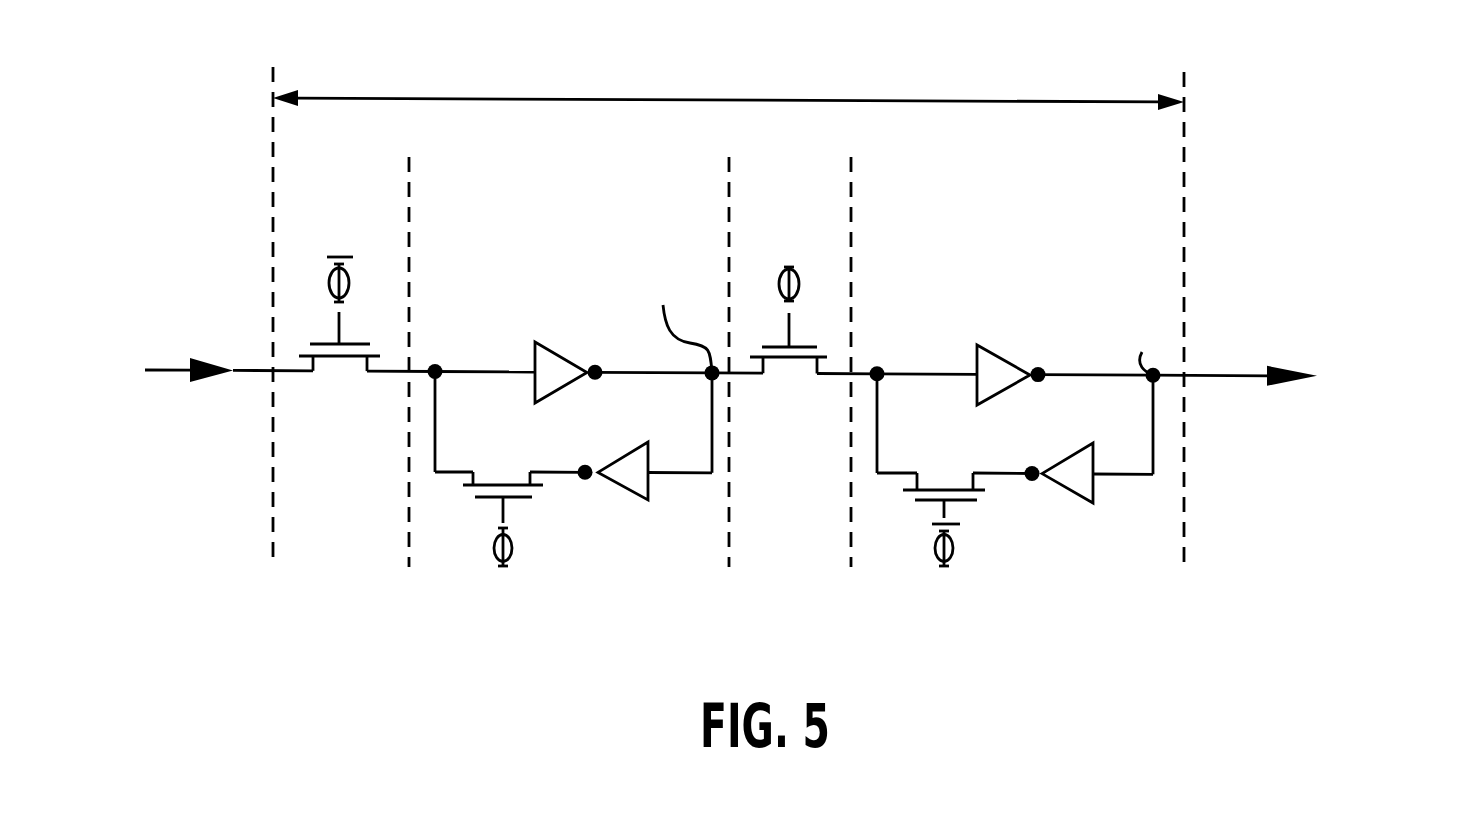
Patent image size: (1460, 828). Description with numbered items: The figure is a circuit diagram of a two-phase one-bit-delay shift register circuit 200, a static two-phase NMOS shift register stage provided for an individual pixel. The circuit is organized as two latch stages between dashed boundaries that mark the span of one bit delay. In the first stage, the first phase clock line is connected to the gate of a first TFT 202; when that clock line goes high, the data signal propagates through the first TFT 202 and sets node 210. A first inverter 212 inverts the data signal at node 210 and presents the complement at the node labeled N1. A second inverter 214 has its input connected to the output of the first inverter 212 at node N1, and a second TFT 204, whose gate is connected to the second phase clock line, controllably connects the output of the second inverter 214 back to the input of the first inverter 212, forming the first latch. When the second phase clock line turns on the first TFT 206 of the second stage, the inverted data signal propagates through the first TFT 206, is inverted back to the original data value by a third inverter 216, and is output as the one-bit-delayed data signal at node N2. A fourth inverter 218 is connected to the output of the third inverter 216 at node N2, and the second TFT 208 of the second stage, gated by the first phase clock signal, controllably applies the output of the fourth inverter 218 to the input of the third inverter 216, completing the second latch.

The two-phase one-bit-delay shift register circuit 200 is at (770, 347).
The first TFT 202 is at (340, 358).
The second TFT 204 is at (463, 488).
The first TFT of the second stage 206 is at (787, 362).
The second TFT of the second stage 208 is at (925, 505).
The node 210 is at (435, 372).
The first inverter 212 is at (557, 352).
The second inverter 214 is at (623, 488).
The third inverter 216 is at (1000, 353).
The fourth inverter 218 is at (1068, 495).